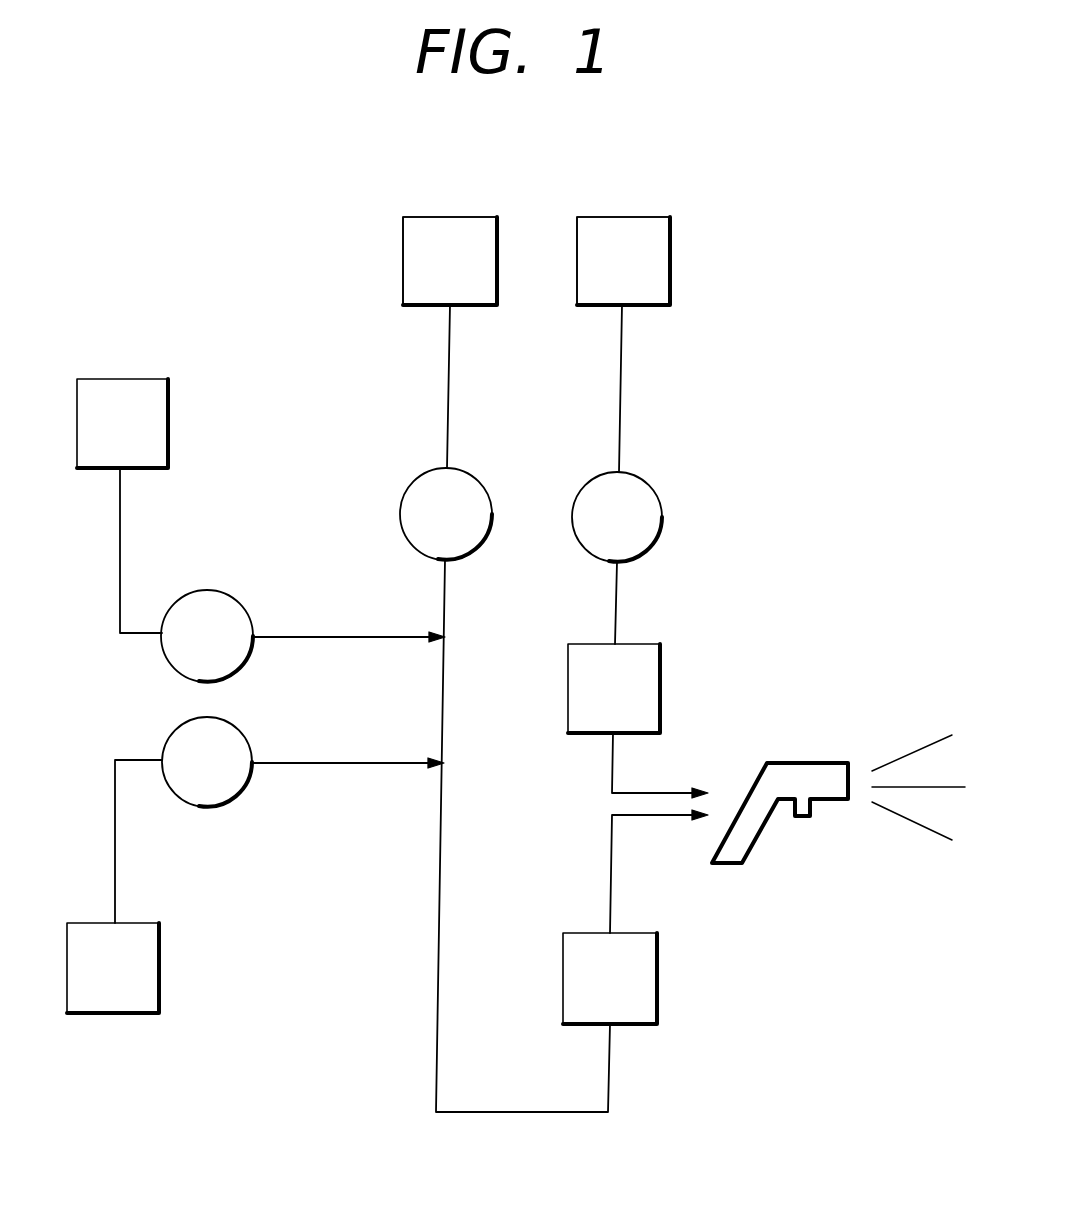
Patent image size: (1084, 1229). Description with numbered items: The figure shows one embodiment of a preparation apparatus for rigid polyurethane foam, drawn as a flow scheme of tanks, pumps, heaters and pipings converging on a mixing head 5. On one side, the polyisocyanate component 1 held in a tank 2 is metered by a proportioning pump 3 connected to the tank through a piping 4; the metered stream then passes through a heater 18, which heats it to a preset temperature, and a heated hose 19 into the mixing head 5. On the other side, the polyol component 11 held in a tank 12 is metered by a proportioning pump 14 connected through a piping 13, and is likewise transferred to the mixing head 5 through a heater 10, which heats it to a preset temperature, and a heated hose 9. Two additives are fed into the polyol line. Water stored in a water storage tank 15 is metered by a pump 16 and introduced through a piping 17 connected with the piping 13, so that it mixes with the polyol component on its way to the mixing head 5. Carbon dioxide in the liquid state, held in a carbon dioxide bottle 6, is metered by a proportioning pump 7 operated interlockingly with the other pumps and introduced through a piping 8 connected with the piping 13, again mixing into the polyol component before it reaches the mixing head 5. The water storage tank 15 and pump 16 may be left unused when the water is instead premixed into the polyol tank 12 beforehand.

The polyisocyanate component 1 is at (657, 245).
The tank 2 is at (625, 217).
The proportioning pump 3 is at (638, 497).
The piping 4 is at (620, 391).
The mixing head 5 is at (807, 772).
The carbon dioxide bottle 6 is at (156, 412).
The proportioning pump 7 is at (227, 605).
The piping 8 is at (340, 637).
The heated hose 9 is at (612, 890).
The heater 10 is at (643, 963).
The polyol component 11 is at (487, 242).
The tank 12 is at (452, 217).
The piping 13 is at (449, 389).
The proportioning pump 14 is at (470, 493).
The water storage tank 15 is at (145, 952).
The pump 16 is at (223, 740).
The piping 17 is at (338, 763).
The heater 18 is at (653, 670).
The heated hose 19 is at (612, 771).